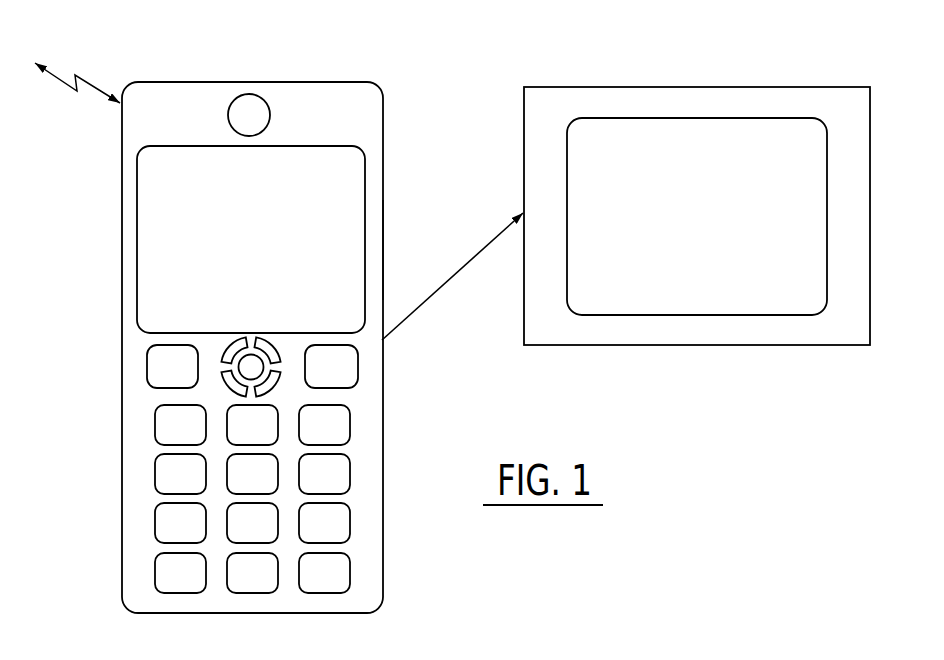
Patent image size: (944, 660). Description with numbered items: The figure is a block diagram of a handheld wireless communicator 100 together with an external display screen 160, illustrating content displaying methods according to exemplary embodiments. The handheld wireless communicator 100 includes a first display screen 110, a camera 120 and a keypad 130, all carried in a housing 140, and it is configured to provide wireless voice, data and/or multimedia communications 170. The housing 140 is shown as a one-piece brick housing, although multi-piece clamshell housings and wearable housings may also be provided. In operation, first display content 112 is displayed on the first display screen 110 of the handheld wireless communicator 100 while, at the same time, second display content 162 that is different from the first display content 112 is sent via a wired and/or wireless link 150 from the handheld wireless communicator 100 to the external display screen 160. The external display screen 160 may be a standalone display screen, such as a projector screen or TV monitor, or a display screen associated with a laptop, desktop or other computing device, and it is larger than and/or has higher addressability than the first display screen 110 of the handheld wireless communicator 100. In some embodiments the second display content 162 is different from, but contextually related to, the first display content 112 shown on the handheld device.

The handheld wireless communicator 100 is at (312, 65).
The first display screen 110 is at (137, 240).
The first display content 112 is at (271, 323).
The camera 120 is at (243, 108).
The keypad 130 is at (145, 408).
The housing 140 is at (383, 182).
The wired and/or wireless link 150 is at (448, 280).
The external display screen 160 is at (673, 80).
The second display content 162 is at (713, 300).
The wireless voice, data and/or multimedia communications 170 is at (53, 68).